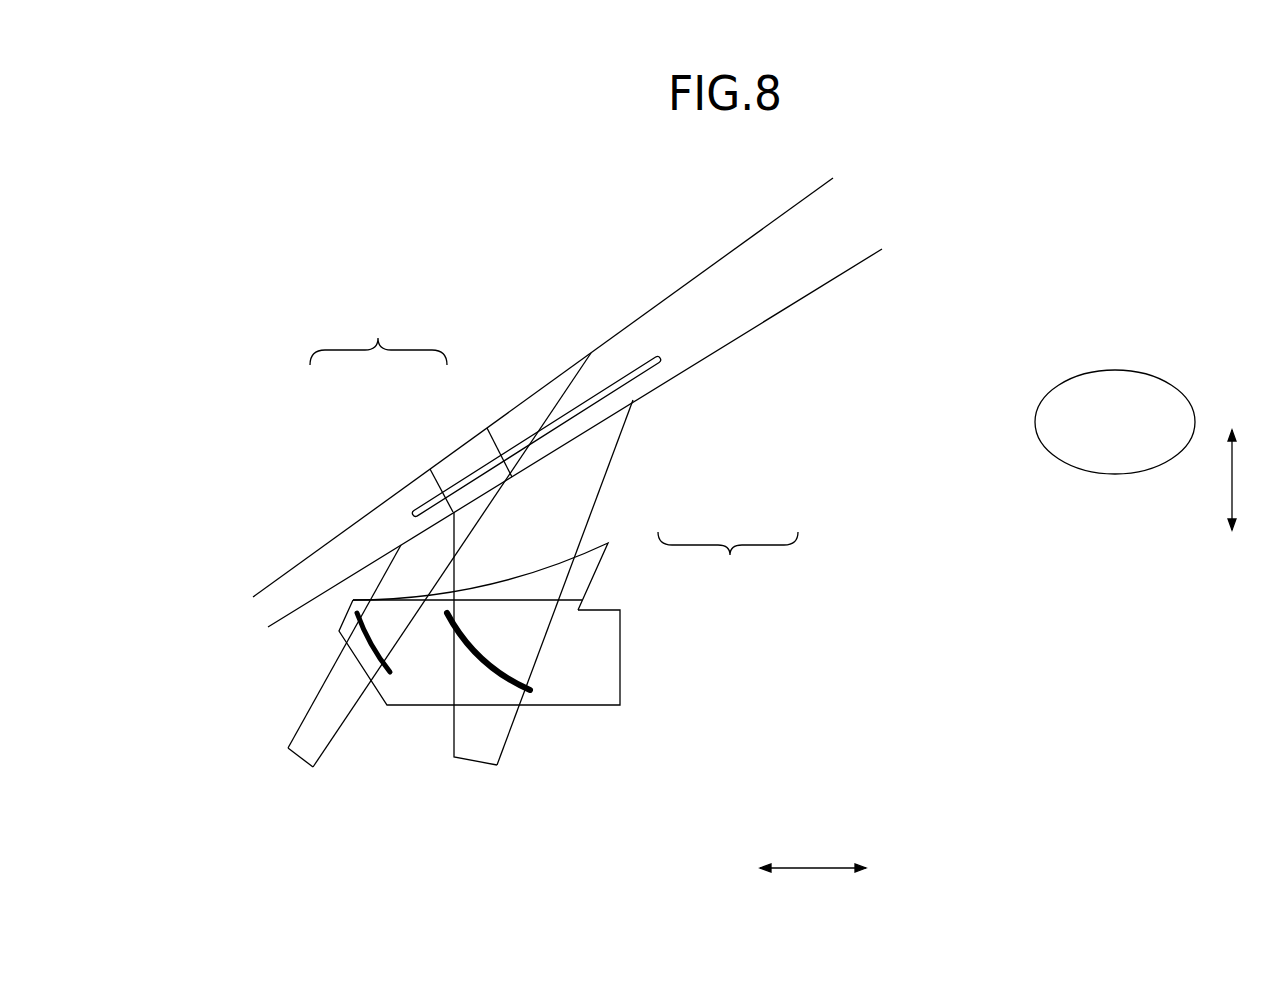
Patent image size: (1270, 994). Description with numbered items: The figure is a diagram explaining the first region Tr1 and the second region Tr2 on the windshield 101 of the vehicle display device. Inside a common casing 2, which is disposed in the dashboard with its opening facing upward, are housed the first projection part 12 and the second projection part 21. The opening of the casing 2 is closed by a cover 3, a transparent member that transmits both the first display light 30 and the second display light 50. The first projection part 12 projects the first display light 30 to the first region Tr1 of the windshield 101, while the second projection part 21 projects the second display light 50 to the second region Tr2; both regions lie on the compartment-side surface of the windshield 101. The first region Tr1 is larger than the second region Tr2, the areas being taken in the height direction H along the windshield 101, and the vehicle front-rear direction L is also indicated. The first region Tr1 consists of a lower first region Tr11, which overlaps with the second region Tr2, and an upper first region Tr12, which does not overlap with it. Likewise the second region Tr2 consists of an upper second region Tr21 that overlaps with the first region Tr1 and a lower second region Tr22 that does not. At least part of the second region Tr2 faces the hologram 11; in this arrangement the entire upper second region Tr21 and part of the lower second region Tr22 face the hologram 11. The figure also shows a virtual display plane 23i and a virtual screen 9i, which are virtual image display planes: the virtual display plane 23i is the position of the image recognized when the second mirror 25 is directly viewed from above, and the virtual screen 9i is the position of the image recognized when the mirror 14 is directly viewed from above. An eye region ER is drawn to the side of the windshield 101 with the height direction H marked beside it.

The windshield 101 is at (773, 200).
The hologram 11 is at (598, 392).
The second display light 50 is at (386, 573).
The second region Tr2 is at (378, 338).
The lower second region Tr22 is at (410, 545).
The upper second region Tr21 is at (450, 462).
The first region Tr1 is at (728, 558).
The lower first region Tr11 is at (524, 470).
The upper first region Tr12 is at (633, 400).
The first display light 30 is at (587, 525).
The cover 3 is at (592, 557).
The casing 2 is at (621, 688).
The second mirror 25 is at (366, 638).
The second projection part 21 is at (386, 680).
The virtual display plane 23i is at (298, 763).
The virtual screen 9i is at (462, 766).
The mirror 14 is at (508, 682).
The first projection part 12 is at (546, 673).
The eye region ER is at (1128, 383).
The height direction H is at (1240, 480).
The vehicle front-rear direction L is at (813, 857).